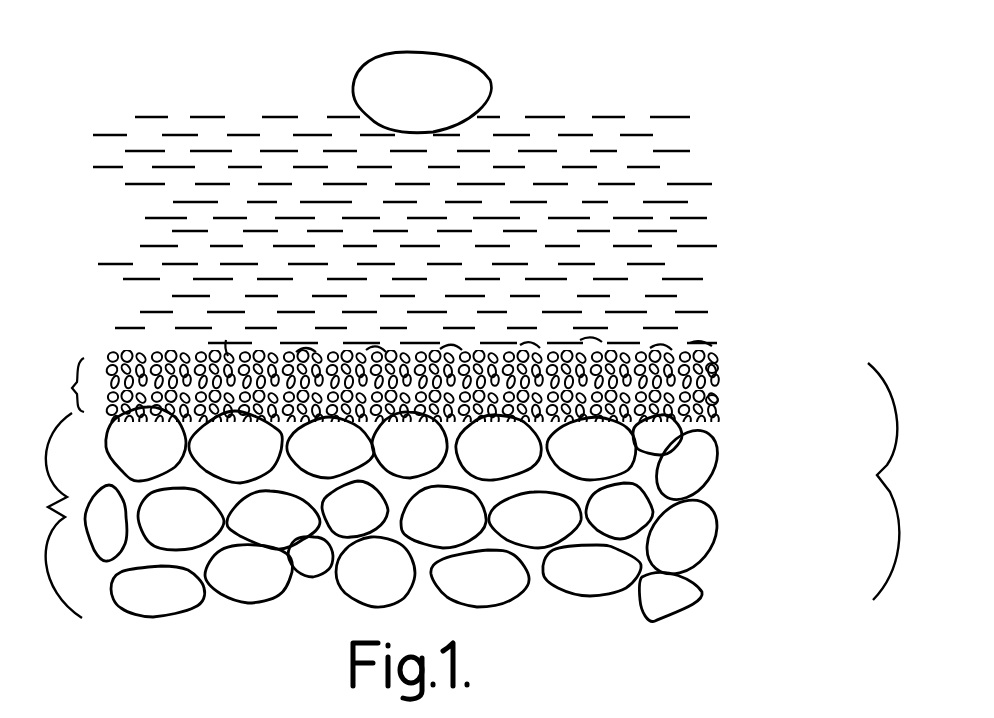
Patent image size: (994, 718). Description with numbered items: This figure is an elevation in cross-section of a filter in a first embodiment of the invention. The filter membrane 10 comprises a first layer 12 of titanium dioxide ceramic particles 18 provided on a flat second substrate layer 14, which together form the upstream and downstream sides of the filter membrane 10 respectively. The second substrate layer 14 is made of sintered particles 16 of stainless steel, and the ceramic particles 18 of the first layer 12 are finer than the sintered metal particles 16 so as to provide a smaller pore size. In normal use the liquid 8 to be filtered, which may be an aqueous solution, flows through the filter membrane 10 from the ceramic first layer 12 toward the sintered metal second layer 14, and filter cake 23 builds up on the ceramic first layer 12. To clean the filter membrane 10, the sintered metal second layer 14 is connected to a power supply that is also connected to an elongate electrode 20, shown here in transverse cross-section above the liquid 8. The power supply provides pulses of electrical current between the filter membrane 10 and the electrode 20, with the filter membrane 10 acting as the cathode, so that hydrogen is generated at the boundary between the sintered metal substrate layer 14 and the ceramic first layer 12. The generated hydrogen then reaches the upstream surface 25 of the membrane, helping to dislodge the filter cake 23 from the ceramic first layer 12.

The liquid 8 is at (635, 185).
The filter membrane 10 is at (893, 481).
The first layer 12 is at (381, 386).
The second substrate layer 14 is at (373, 514).
The sintered particles 16 is at (693, 463).
The ceramic particles 18 is at (713, 400).
The elongate electrode 20 is at (422, 80).
The filter cake 23 is at (673, 348).
The upstream surface 25 is at (712, 365).